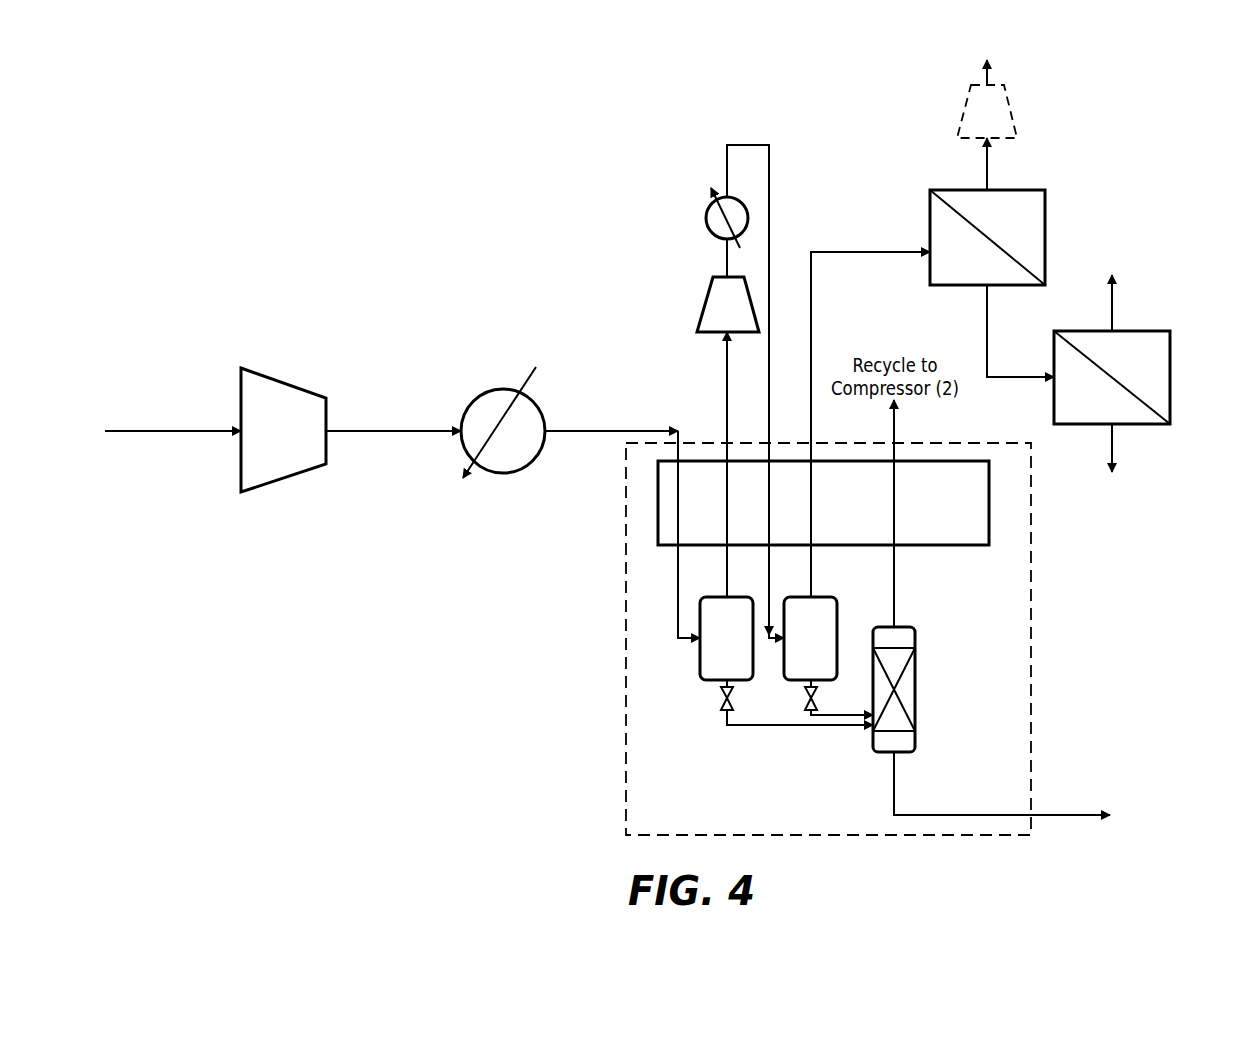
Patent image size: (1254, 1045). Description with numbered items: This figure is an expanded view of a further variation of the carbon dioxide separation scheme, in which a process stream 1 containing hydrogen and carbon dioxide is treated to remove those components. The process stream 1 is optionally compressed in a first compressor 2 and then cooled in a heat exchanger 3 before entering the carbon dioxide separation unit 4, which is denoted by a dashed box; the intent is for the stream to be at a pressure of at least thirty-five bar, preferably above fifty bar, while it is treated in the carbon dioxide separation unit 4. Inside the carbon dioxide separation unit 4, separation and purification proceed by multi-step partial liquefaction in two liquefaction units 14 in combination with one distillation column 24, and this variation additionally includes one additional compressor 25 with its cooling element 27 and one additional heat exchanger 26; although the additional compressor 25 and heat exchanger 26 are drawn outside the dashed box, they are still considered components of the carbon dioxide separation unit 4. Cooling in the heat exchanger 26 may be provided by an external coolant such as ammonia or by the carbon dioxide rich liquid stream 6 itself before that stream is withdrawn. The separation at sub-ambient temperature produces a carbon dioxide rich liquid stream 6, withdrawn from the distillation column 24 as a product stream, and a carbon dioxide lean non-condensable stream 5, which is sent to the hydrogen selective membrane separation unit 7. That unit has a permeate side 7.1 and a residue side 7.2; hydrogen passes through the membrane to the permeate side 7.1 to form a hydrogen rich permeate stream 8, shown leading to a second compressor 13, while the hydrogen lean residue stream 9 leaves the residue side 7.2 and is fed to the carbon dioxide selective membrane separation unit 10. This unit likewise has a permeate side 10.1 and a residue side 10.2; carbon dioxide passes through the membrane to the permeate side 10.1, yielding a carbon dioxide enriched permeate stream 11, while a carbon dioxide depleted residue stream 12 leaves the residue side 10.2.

The process stream 1 is at (173, 414).
The first compressor 2 is at (276, 445).
The heat exchanger 3 is at (506, 445).
The carbon dioxide separation unit 4 is at (647, 750).
The carbon dioxide lean non-condensable stream 5 is at (870, 409).
The carbon dioxide rich liquid stream 6 is at (1002, 783).
The hydrogen selective membrane separation unit 7 is at (1010, 235).
The permeate side of hydrogen selective membrane 7.1 is at (997, 227).
The residue side of hydrogen selective membrane 7.2 is at (942, 275).
The hydrogen rich permeate stream 8 is at (998, 164).
The hydrogen lean residue stream 9 is at (1020, 331).
The carbon dioxide selective membrane separation unit 10 is at (1140, 377).
The permeate side of carbon dioxide selective membrane 10.1 is at (1110, 363).
The residue side of carbon dioxide selective membrane 10.2 is at (1067, 416).
The carbon dioxide enrich permeate stream 11 is at (1112, 288).
The carbon dioxide depleted residue stream 12 is at (1112, 463).
The second compressor 13 is at (1012, 102).
The liquefaction unit 14 is at (698, 662).
The distillation column 24 is at (918, 640).
The additional compressor 25 is at (700, 305).
The additional heat exchanger 26 is at (946, 532).
The cooling element for additional compressor 27 is at (706, 220).